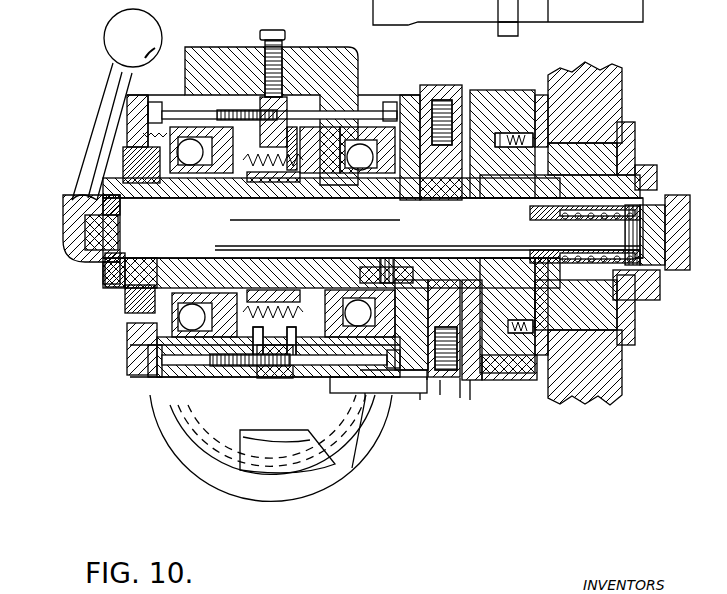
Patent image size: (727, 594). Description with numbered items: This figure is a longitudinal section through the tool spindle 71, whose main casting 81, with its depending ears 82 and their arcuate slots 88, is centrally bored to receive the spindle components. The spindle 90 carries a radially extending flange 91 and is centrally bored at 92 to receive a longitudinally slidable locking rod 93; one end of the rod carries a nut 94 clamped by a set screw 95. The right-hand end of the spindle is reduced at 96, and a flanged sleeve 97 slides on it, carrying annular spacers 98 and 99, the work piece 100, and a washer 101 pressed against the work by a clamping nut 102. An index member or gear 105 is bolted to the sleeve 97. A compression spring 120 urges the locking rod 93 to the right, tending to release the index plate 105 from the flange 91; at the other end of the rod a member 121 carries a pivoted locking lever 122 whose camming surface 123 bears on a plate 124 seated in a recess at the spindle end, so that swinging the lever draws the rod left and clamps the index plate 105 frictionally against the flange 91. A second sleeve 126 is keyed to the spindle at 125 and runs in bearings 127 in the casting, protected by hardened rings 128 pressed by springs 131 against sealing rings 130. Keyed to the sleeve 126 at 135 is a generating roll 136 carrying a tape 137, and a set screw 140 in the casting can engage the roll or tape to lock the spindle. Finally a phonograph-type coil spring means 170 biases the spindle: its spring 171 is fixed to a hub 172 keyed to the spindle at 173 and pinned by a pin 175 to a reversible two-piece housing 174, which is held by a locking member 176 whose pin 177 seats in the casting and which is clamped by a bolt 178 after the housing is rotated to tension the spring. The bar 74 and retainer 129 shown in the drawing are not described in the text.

The tool spindle 71 is at (403, 90).
The frame bar 74 is at (373, 6).
The main casting 81 is at (366, 84).
The depending ears 82 is at (392, 421).
The arcuate slots 88 is at (292, 470).
The spindle 90 is at (178, 248).
The radially extending flange 91 is at (480, 385).
The central bore 92 is at (172, 290).
The locking rod 93 is at (150, 228).
The nut 94 is at (672, 268).
The set screw 95 is at (672, 203).
The reduced end 96 is at (610, 288).
The flanged sleeve 97 is at (592, 265).
The annular spacer 98 is at (600, 155).
The annular spacer 99 is at (546, 112).
The work piece 100 is at (608, 97).
The washer 101 is at (630, 150).
The clamping nut 102 is at (648, 172).
The index member or gear 105 is at (528, 385).
The compression spring 120 is at (625, 285).
The member 121 is at (85, 255).
The locking lever 122 is at (92, 133).
The camming surface 123 is at (100, 258).
The plate 124 is at (88, 193).
The key 125 is at (392, 270).
The second sleeve 126 is at (298, 275).
The bearings 127 is at (165, 390).
The hardened rings 128 is at (250, 298).
The retainer 129 is at (165, 330).
The sealing rings 130 is at (190, 128).
The springs 131 is at (128, 150).
The key 135 is at (272, 182).
The generating roll 136 is at (278, 110).
The tape 137 is at (275, 358).
The set screw 140 is at (272, 30).
The coil spring means 170 is at (453, 375).
The spring 171 is at (463, 400).
The hub 172 is at (445, 155).
The key 173 is at (470, 236).
The two-piece housing 174 is at (432, 400).
The pin 175 is at (432, 410).
The locking member 176 is at (385, 360).
The pin 177 is at (366, 400).
The bolt 178 is at (388, 380).